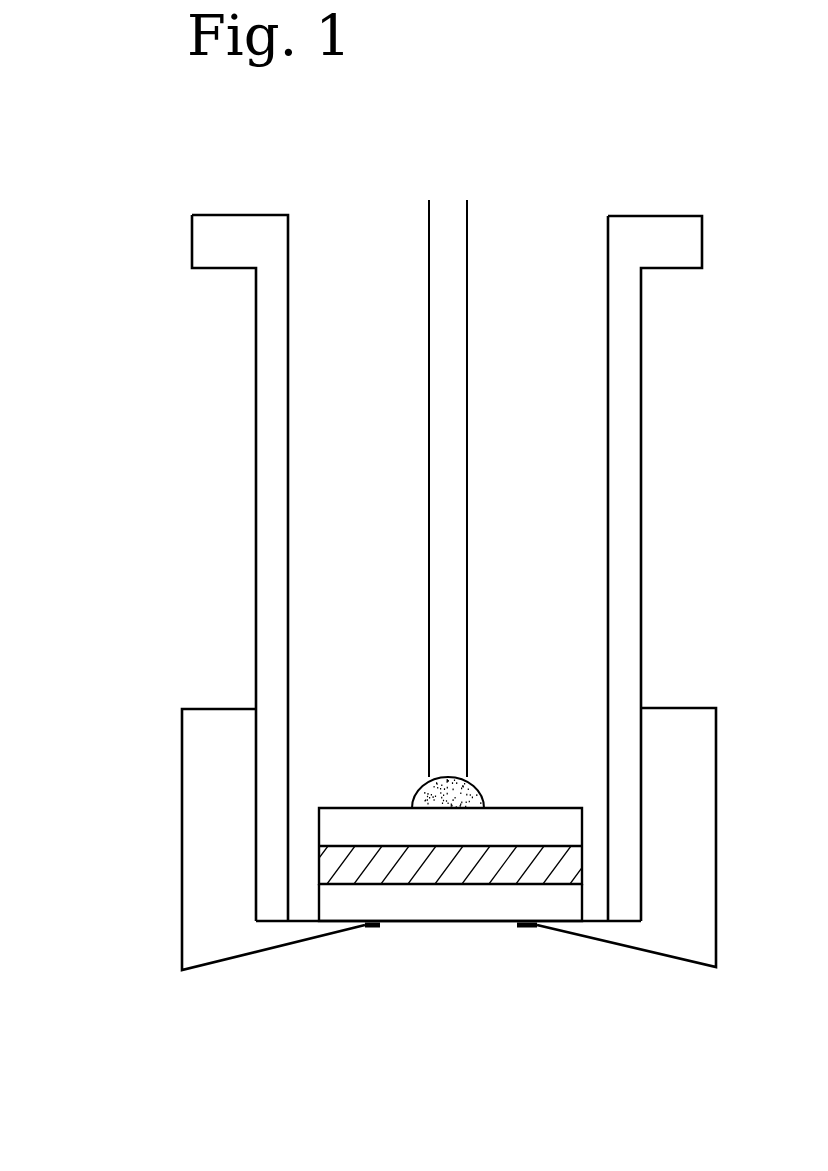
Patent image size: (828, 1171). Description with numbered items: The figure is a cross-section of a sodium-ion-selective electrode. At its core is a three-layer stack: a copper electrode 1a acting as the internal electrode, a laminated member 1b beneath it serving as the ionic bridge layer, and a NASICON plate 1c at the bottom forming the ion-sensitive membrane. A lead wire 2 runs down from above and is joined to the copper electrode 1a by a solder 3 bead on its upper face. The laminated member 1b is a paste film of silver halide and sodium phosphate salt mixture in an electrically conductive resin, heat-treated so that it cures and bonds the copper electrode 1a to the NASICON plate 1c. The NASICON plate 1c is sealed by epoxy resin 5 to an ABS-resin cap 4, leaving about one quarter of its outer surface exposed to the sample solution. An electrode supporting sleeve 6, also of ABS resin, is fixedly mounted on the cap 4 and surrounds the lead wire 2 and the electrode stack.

The copper electrode 1a is at (330, 823).
The laminated member 1b is at (347, 875).
The NASICON plate 1c is at (570, 902).
The lead wire 2 is at (460, 455).
The solder 3 is at (467, 790).
The cap 4 is at (665, 730).
The epoxy resin 5 is at (523, 933).
The electrode supporting sleeve 6 is at (625, 530).